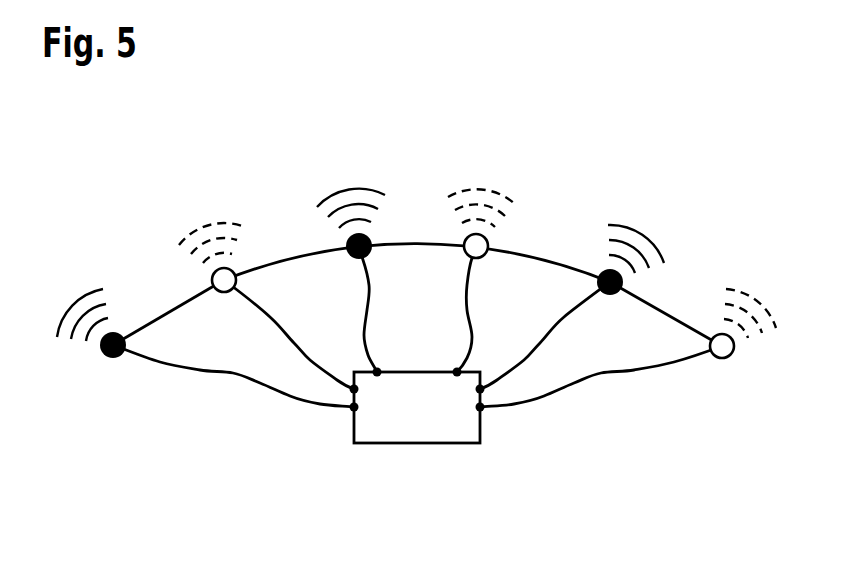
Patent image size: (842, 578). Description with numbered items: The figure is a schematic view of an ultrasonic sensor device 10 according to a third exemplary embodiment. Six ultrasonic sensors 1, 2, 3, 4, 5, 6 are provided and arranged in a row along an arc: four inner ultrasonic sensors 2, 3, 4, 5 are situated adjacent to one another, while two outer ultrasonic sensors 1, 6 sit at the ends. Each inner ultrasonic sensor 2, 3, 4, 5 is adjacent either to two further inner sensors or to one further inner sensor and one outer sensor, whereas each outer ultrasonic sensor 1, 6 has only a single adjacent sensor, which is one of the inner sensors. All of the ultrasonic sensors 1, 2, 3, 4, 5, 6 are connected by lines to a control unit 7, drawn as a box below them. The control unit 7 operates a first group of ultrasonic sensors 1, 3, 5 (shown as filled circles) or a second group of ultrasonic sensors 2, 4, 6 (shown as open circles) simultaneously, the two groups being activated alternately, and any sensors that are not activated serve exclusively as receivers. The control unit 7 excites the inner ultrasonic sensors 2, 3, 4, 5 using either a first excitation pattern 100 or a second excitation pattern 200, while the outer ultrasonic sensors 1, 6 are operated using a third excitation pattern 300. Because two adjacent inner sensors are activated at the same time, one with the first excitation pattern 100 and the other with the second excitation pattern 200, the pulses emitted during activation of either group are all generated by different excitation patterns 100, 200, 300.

The outer ultrasonic sensor 1 is at (119, 371).
The inner ultrasonic sensor 2 is at (198, 279).
The inner ultrasonic sensor 3 is at (325, 240).
The inner ultrasonic sensor 4 is at (495, 241).
The inner ultrasonic sensor 5 is at (650, 278).
The outer ultrasonic sensor 6 is at (716, 373).
The control unit 7 is at (418, 443).
The ultrasonic sensor device 10 is at (126, 173).
The first excitation pattern 100 is at (354, 178).
The second excitation pattern 200 is at (222, 198).
The third excitation pattern 300 is at (67, 281).